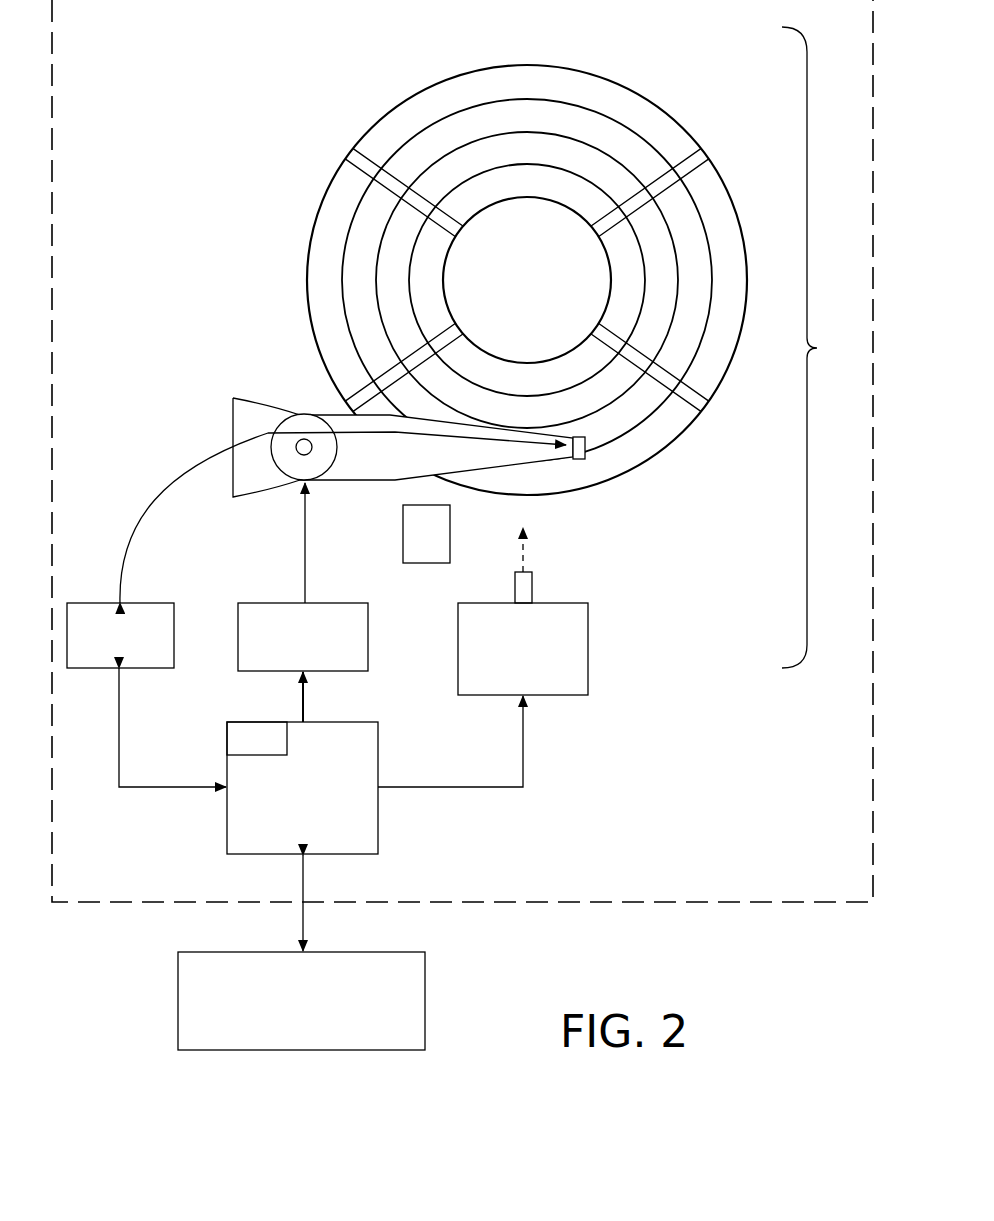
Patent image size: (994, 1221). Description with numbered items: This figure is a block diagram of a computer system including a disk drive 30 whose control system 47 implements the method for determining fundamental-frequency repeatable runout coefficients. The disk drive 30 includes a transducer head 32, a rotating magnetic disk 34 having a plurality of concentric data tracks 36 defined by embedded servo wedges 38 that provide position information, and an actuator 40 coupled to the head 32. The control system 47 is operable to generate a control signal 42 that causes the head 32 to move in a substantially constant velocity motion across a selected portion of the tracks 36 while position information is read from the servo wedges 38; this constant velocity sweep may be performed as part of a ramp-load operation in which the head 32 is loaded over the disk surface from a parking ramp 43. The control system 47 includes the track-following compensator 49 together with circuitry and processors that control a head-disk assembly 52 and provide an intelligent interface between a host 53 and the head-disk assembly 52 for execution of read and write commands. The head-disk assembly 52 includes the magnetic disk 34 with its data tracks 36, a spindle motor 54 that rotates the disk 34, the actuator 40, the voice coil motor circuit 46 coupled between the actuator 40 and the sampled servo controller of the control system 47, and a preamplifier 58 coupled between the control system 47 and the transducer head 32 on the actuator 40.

The disk drive 30 is at (753, 903).
The transducer head 32 is at (578, 452).
The rotating magnetic disk 34 is at (410, 98).
The concentric data tracks 36 is at (348, 190).
The embedded servo wedges 38 is at (377, 148).
The actuator 40 is at (384, 459).
The control signal 42 is at (305, 705).
The parking ramp 43 is at (414, 552).
The voice coil motor (VCM) circuit 46 is at (290, 662).
The control system 47 is at (289, 842).
The track-following compensator 49 is at (243, 750).
The head-disk assembly (HDA) 52 is at (819, 347).
The host 53 is at (289, 1029).
The spindle motor 54 is at (510, 692).
The preamplifier 58 is at (107, 662).